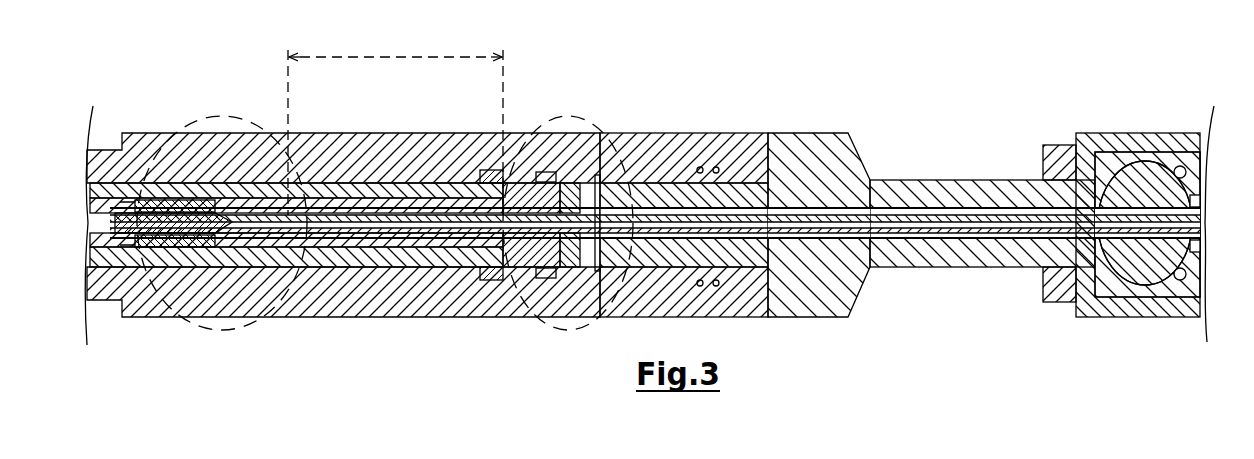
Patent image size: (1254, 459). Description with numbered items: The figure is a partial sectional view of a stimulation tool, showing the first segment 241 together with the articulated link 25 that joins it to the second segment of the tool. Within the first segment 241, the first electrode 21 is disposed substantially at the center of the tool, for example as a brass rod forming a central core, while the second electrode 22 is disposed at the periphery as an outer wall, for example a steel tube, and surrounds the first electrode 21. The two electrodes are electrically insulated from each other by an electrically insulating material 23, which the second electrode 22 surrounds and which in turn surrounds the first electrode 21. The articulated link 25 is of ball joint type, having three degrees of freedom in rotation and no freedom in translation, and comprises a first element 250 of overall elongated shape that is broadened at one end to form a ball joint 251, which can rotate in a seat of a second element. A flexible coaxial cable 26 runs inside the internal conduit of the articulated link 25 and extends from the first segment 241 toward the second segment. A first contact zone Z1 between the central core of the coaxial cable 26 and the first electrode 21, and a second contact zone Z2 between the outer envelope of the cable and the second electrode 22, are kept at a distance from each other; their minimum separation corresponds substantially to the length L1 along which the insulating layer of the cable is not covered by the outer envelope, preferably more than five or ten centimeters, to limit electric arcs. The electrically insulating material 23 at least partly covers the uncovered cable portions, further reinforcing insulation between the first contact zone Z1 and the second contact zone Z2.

The first electrode 21 is at (128, 200).
The second electrode 22 is at (405, 133).
The electrically insulating material 23 is at (430, 185).
The first segment 241 is at (695, 133).
The articulated link 25 is at (866, 294).
The first element 250 is at (992, 268).
The ball joint 251 is at (1128, 195).
The flexible coaxial cable 26 is at (950, 208).
The first contact zone Z1 is at (228, 332).
The second contact zone Z2 is at (558, 335).
The length L1 is at (395, 119).